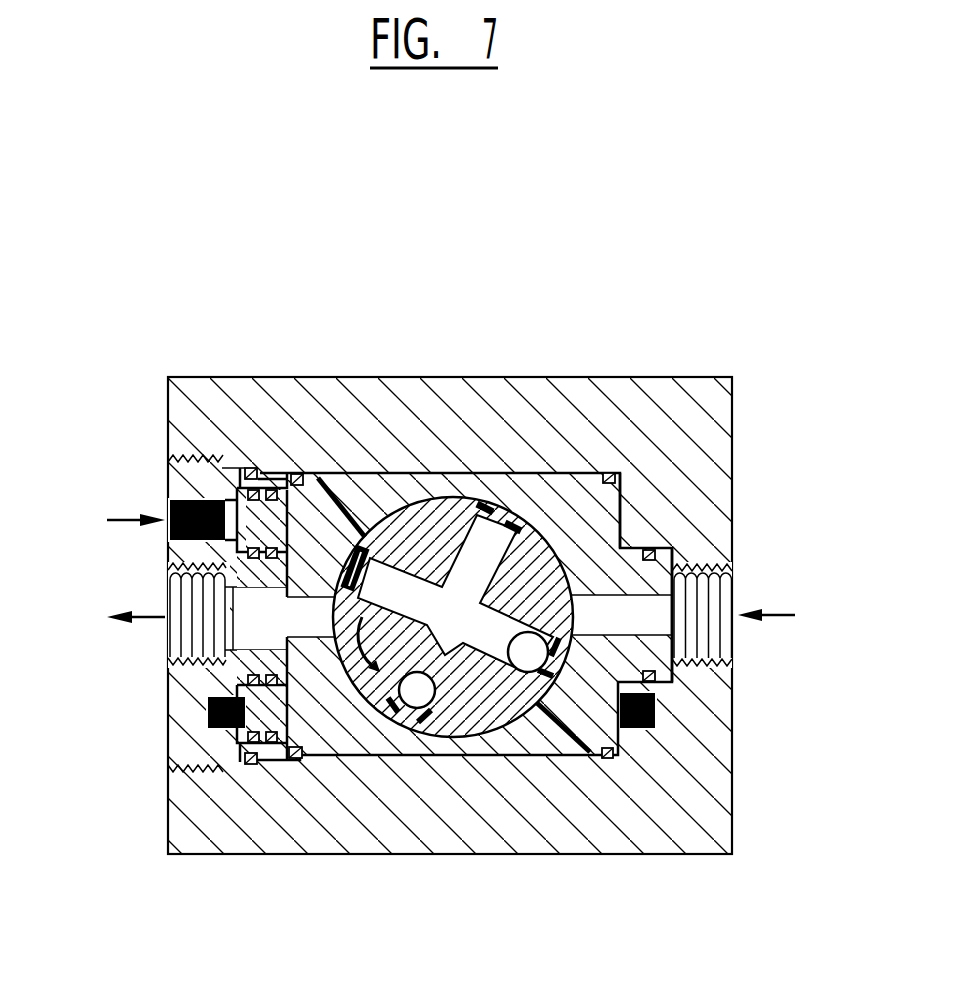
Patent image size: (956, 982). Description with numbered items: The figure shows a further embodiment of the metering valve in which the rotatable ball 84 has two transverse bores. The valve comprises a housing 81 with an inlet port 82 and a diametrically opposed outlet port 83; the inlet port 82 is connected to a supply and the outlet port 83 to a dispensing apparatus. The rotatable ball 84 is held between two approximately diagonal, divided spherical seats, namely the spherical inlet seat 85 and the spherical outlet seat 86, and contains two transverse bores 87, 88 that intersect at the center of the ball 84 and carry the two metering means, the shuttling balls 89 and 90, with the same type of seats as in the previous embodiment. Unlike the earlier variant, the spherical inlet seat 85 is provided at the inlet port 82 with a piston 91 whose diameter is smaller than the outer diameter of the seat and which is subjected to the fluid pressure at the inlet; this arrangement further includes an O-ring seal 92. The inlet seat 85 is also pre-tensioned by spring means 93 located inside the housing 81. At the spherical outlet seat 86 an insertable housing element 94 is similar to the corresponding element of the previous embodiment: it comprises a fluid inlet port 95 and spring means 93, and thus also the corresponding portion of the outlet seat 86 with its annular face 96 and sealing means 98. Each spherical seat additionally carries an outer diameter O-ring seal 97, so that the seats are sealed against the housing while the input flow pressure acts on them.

The housing 81 is at (653, 803).
The inlet port 82 is at (705, 585).
The outlet port 83 is at (188, 595).
The rotatable ball 84 is at (430, 522).
The spherical inlet seat 85 is at (580, 505).
The spherical outlet seat 86 is at (325, 733).
The transverse bore 87 is at (493, 648).
The transverse bore 88 is at (470, 532).
The shuttling ball 89 is at (527, 655).
The shuttling ball 90 is at (328, 497).
The piston 91 is at (680, 672).
The O-ring seal 92 is at (655, 552).
The spring means 93 is at (210, 708).
The insertable housing element 94 is at (195, 743).
The fluid inlet port 95 is at (170, 507).
The annular face 96 is at (267, 512).
The outer diameter O-ring seal 97 is at (607, 473).
The sealing means 98 is at (250, 768).